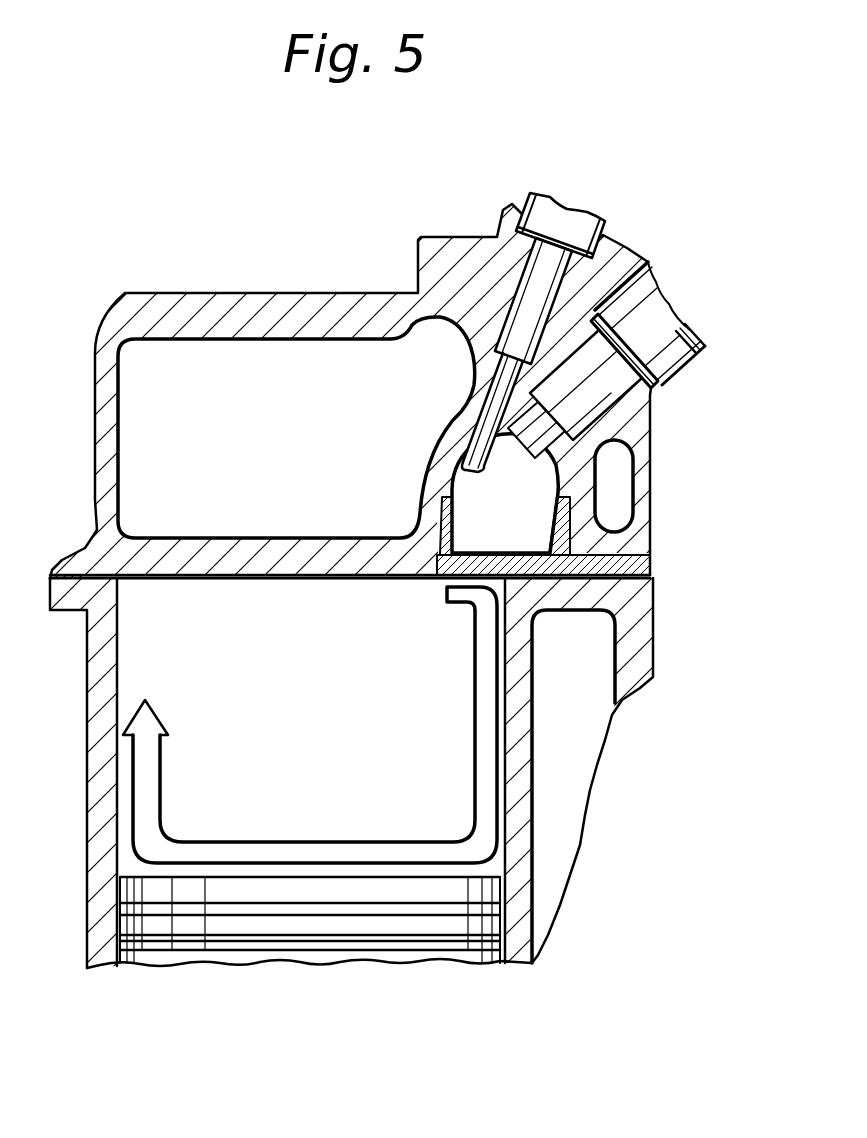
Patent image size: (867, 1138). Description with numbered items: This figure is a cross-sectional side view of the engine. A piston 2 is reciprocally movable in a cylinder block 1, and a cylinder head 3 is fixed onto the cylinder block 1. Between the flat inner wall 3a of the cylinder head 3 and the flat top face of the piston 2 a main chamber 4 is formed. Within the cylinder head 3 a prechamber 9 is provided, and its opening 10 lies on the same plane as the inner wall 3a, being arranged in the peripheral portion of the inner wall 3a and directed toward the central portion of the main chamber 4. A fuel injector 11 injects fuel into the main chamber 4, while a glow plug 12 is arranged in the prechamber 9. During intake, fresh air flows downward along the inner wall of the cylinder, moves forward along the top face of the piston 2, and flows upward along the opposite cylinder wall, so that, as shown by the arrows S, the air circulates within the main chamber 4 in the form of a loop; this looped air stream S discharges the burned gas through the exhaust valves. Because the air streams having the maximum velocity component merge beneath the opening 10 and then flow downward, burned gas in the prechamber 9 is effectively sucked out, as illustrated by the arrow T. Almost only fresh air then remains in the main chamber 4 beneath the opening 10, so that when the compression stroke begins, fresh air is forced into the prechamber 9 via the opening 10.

The cylinder block 1 is at (637, 647).
The piston 2 is at (383, 928).
The cylinder head 3 is at (262, 306).
The inner wall of the cylinder head 3a is at (298, 593).
The main chamber 4 is at (137, 600).
The prechamber 9 is at (543, 482).
The opening of the prechamber 10 is at (503, 570).
The fuel injector 11 is at (683, 347).
The glow plug 12 is at (577, 218).
The air stream S is at (327, 846).
The arrow indicating burned gas flow T is at (500, 553).